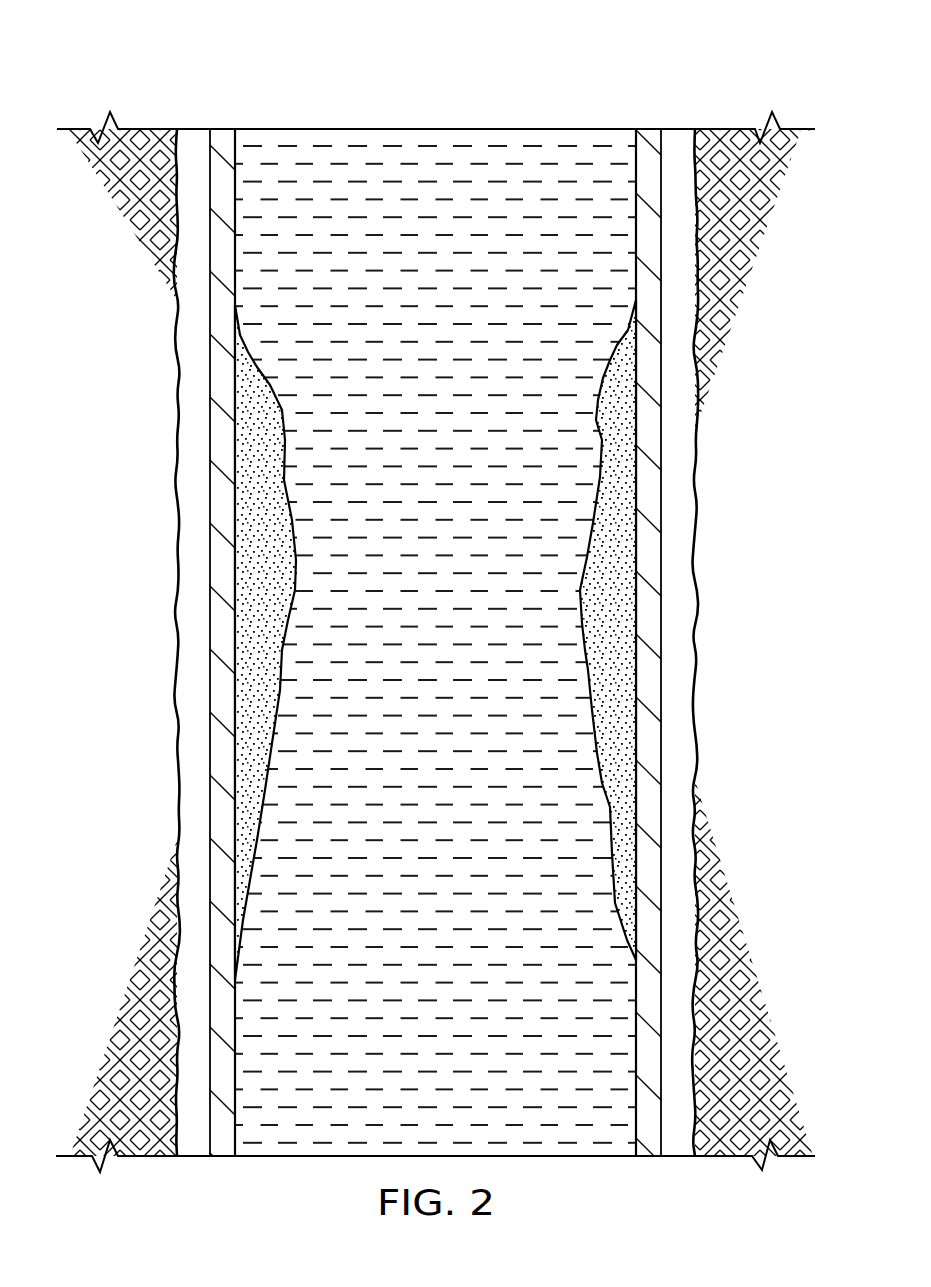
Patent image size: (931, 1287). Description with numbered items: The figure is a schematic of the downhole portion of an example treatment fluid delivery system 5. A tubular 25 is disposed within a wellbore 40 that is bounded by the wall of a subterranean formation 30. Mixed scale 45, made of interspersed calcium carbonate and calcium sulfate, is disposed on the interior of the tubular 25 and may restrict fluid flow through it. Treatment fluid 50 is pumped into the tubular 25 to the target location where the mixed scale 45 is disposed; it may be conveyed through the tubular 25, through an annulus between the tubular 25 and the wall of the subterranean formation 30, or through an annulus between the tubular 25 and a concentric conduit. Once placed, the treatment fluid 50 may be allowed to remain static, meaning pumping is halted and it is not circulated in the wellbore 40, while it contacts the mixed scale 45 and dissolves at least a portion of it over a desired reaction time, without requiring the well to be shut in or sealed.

The treatment fluid delivery system 5 is at (334, 64).
The tubular 25 is at (222, 371).
The subterranean formation 30 is at (782, 346).
The wellbore 40 is at (177, 678).
The mixed scale 45 is at (275, 664).
The treatment fluid 50 is at (497, 147).